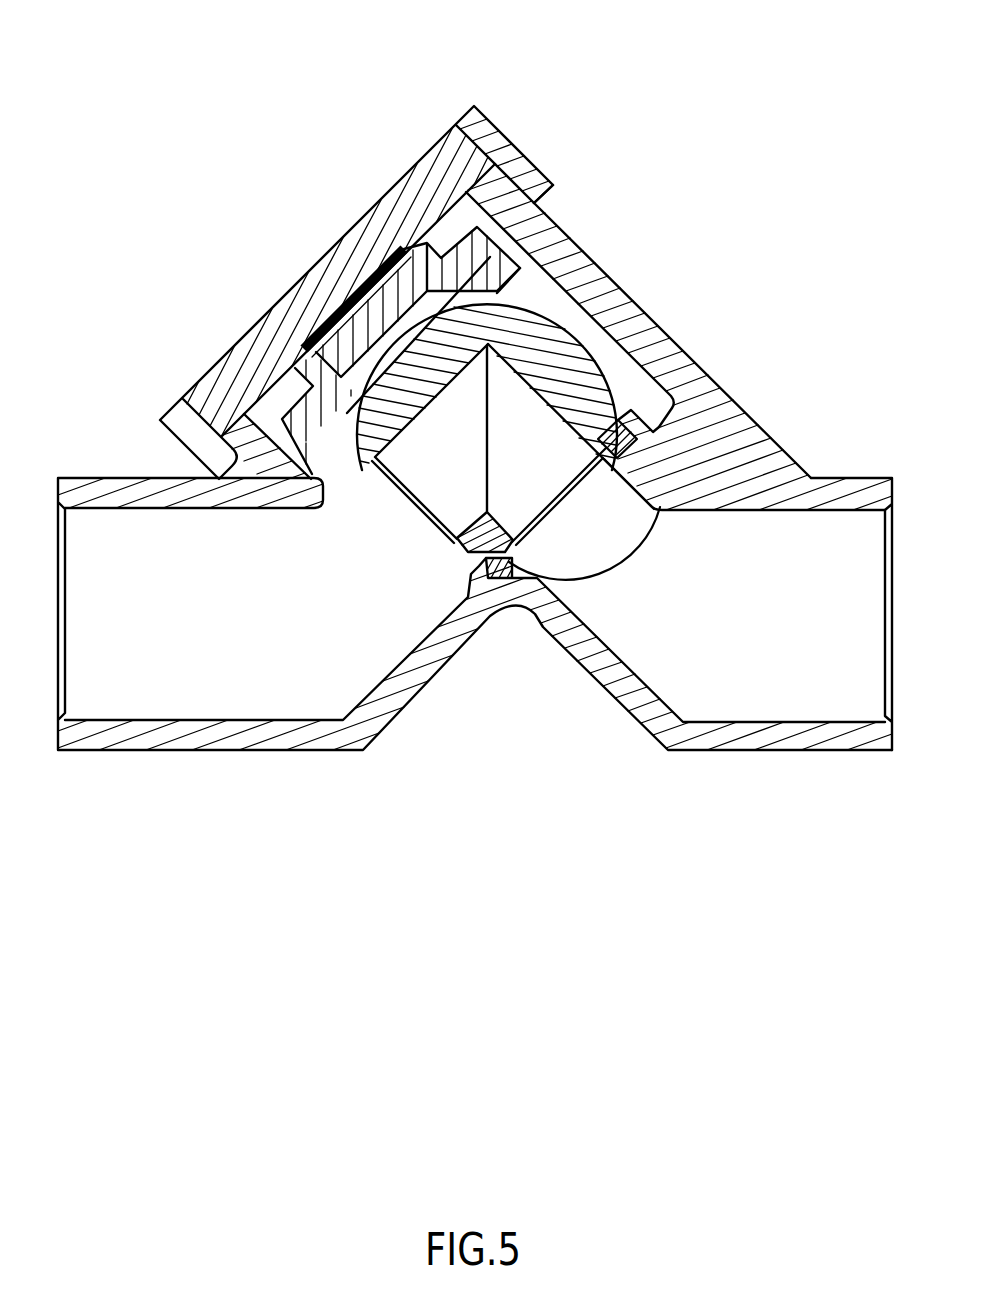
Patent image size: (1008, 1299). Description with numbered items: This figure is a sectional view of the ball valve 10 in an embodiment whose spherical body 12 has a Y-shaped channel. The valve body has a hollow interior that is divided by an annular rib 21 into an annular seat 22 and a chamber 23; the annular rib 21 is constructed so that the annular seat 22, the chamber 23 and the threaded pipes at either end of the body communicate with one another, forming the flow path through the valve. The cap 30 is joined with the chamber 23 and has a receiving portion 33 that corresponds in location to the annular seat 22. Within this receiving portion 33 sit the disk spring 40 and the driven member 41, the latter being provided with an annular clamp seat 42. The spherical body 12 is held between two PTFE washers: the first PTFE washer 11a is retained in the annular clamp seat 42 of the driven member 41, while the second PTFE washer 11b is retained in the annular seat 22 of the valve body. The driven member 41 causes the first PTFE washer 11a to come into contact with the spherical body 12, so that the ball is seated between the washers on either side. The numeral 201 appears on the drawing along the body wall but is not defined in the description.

The ball valve 10 is at (250, 152).
The first PTFE washer 11a is at (522, 248).
The second PTFE washer 11b is at (690, 428).
The spherical body 12 is at (542, 342).
The bonnet neck of valve body 201 is at (643, 308).
The annular rib 21 is at (545, 610).
The annular seat 22 is at (608, 495).
The chamber 23 is at (643, 393).
The cap 30 is at (233, 387).
The receiving portion 33 is at (313, 377).
The disk spring 40 is at (342, 340).
The driven member 41 is at (397, 253).
The annular clamp seat 42 is at (465, 232).